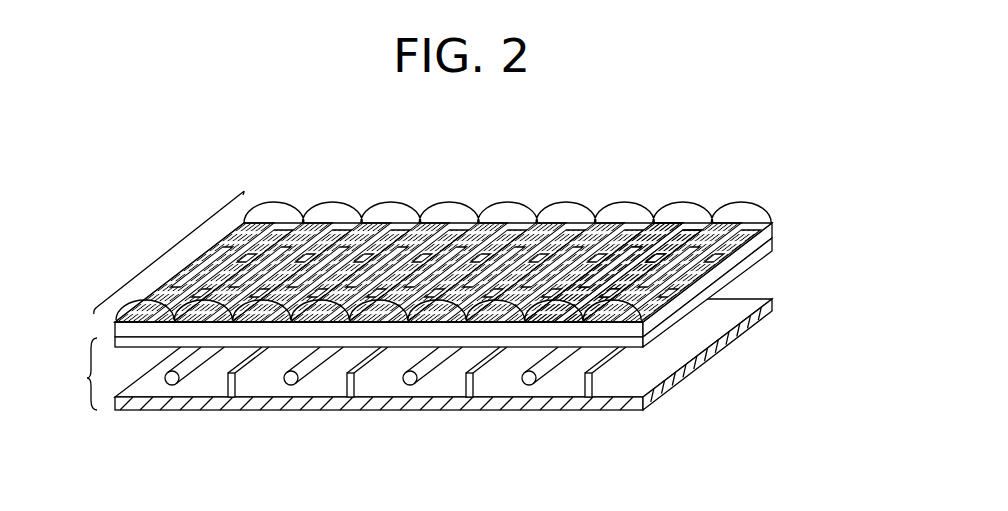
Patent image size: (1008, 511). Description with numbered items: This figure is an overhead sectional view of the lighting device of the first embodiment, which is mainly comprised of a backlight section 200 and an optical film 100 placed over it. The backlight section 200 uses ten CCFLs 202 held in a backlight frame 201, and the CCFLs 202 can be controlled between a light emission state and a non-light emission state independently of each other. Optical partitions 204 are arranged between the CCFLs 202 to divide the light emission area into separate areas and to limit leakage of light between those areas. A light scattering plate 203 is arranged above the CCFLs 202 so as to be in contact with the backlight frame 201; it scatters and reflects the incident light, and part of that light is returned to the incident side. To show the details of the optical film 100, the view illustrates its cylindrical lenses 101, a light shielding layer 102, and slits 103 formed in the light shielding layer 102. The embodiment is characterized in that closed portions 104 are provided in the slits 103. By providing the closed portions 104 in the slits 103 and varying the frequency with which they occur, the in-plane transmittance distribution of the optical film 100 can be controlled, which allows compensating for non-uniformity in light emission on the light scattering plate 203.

The optical film 100 is at (158, 258).
The cylindrical lenses 101 is at (330, 201).
The light shielding layer 102 is at (434, 222).
The slits 103 is at (565, 225).
The closed portions 104 is at (619, 228).
The backlight section 200 is at (65, 374).
The backlight frame 201 is at (372, 408).
The CCFLs 202 is at (523, 385).
The light scattering plate 203 is at (765, 252).
The optical partitions 204 is at (603, 370).